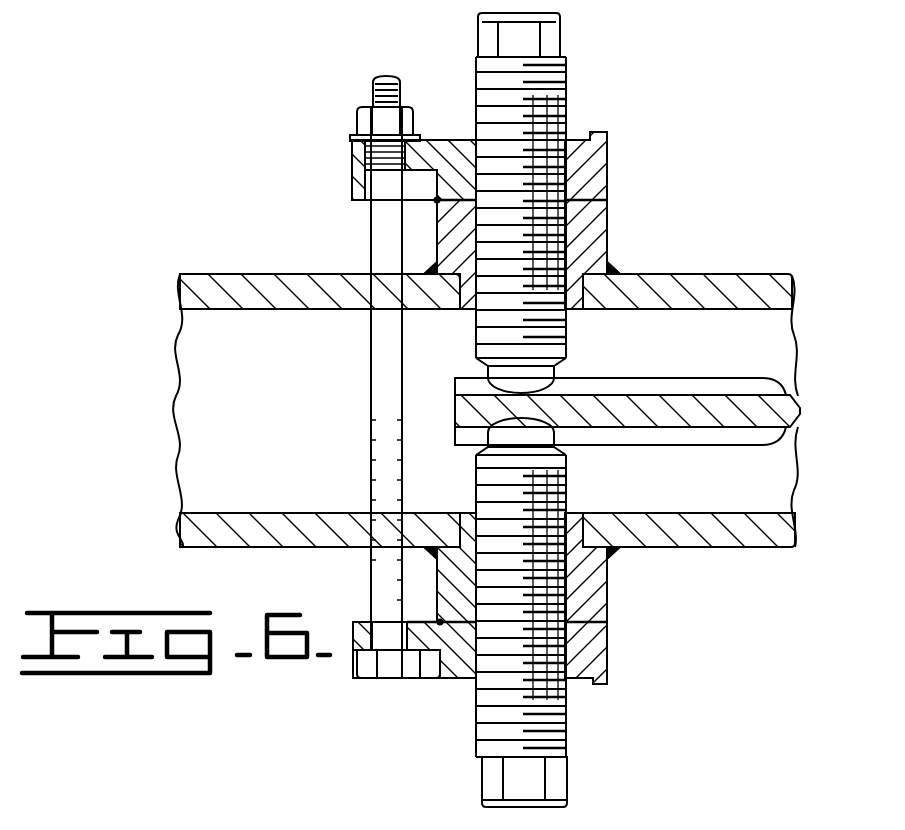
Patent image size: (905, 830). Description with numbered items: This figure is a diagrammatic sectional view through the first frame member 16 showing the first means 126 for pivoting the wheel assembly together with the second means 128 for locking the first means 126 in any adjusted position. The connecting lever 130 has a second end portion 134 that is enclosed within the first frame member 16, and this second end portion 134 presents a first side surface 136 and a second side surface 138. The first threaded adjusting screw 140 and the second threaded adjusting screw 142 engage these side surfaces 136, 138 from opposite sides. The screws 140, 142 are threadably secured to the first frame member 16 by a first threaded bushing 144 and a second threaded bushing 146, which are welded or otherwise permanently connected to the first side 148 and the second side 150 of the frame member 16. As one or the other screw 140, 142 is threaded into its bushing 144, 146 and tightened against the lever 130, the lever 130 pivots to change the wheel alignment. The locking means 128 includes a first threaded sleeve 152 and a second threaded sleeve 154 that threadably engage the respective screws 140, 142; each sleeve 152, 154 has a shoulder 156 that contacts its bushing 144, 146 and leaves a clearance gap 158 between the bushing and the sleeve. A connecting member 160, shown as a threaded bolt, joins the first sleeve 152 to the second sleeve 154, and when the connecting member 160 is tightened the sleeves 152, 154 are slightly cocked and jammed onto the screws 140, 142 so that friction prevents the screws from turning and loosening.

The first frame member 16 is at (496, 412).
The first means 126 is at (612, 118).
The second means 128 is at (339, 245).
The connecting lever 130 is at (800, 398).
The second end portion 134 is at (754, 453).
The first side surface 136 is at (645, 430).
The second side surface 138 is at (650, 395).
The first threaded adjusting screw 140 is at (487, 712).
The second threaded adjusting screw 142 is at (558, 97).
The first threaded bushing 144 is at (605, 592).
The second threaded bushing 146 is at (607, 237).
The first side 148 is at (752, 548).
The second side 150 is at (673, 272).
The first threaded sleeve 152 is at (603, 654).
The second threaded sleeve 154 is at (607, 158).
The shoulder 156 is at (607, 195).
The clearance gap 158 is at (437, 200).
The connecting member 160 is at (372, 415).